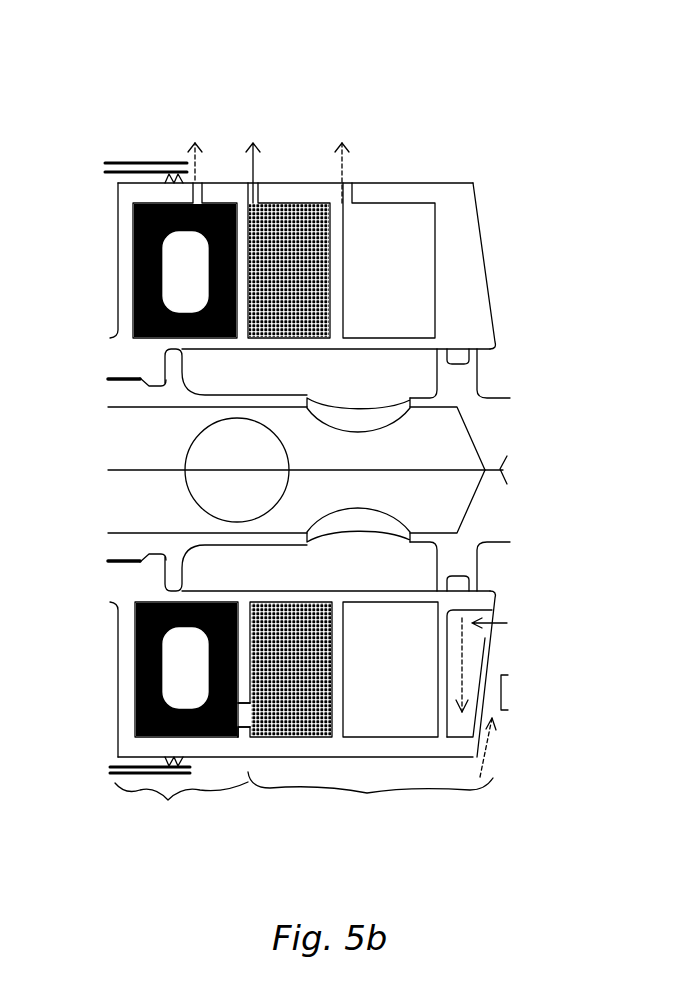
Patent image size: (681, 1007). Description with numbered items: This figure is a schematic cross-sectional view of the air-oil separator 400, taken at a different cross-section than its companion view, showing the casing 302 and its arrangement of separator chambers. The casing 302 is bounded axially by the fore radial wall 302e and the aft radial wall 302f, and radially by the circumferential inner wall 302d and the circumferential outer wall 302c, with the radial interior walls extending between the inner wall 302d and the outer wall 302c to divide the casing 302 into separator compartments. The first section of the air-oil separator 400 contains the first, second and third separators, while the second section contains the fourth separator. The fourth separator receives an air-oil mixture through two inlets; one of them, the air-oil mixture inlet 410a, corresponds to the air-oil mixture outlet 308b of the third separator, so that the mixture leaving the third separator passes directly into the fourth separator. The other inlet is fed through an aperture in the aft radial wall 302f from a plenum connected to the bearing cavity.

The air-oil separator 400 is at (637, 91).
The casing 302 is at (492, 198).
The circumferential outer wall 302c is at (405, 186).
The fore radial wall 302e is at (468, 271).
The aft radial wall 302f is at (123, 258).
The circumferential inner wall 302d is at (120, 362).
The air-oil mixture outlet 308b is at (233, 723).
The air-oil mixture inlet 410a is at (287, 799).